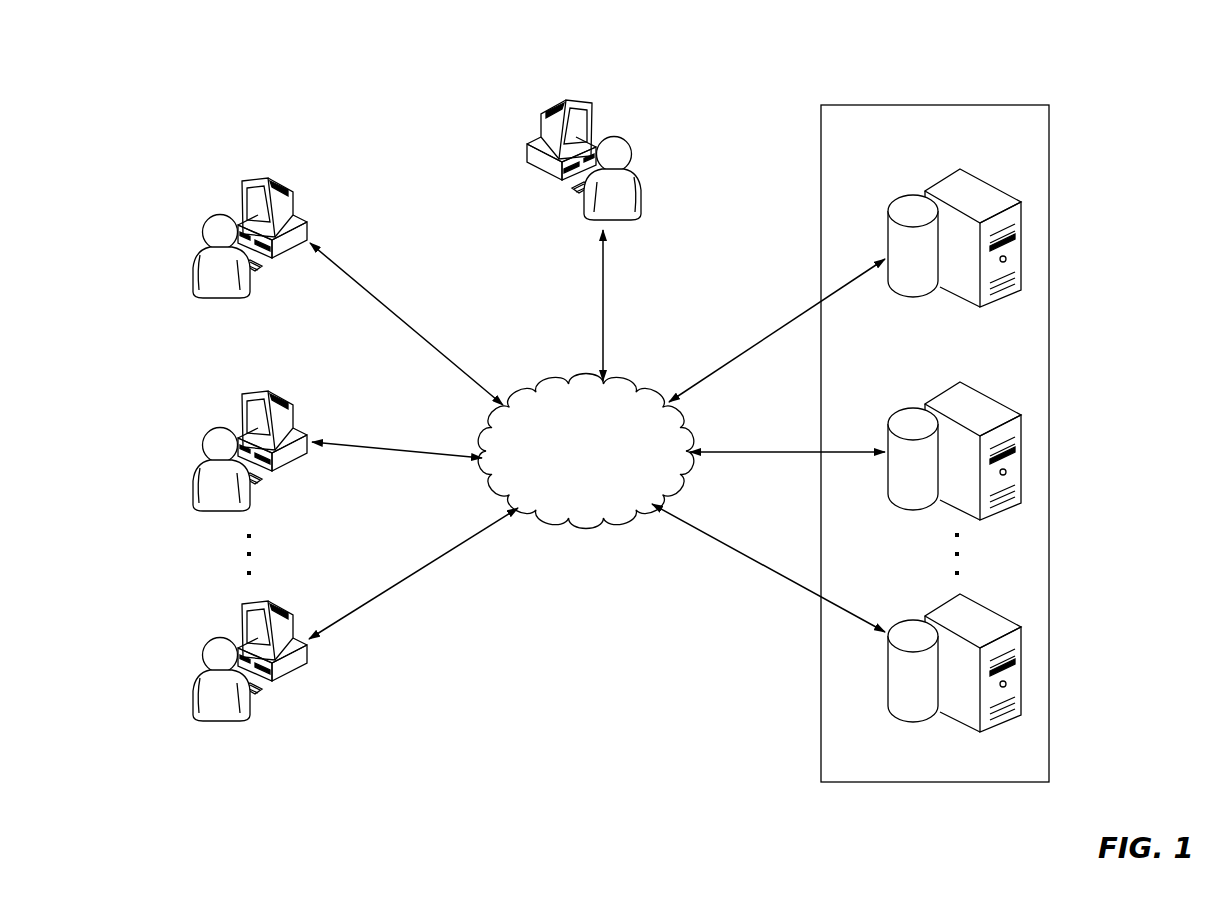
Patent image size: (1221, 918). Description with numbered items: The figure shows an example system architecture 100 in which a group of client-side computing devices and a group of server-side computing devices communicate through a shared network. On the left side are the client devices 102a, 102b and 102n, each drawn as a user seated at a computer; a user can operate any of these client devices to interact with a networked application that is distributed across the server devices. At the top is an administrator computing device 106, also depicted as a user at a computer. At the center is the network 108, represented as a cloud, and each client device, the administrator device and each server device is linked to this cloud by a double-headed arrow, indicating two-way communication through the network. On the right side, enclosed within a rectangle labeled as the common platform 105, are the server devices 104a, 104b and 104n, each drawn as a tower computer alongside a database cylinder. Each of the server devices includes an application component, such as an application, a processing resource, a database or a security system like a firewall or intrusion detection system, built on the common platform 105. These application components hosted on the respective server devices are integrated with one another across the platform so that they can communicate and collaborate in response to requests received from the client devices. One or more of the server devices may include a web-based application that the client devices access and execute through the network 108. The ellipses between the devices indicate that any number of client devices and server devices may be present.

The system architecture 100 is at (438, 64).
The client-side computing device 102a is at (241, 202).
The client-side computing device 102b is at (241, 415).
The client-side computing device 102n is at (241, 625).
The server-side computing device 104a is at (940, 180).
The server-side computing device 104b is at (942, 393).
The server-side computing device 104n is at (927, 615).
The common platform 105 is at (821, 185).
The administrator computing device 106 is at (550, 108).
The network 108 is at (580, 383).